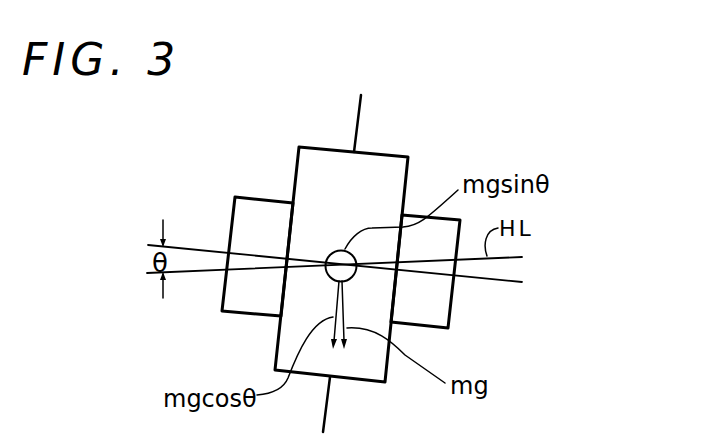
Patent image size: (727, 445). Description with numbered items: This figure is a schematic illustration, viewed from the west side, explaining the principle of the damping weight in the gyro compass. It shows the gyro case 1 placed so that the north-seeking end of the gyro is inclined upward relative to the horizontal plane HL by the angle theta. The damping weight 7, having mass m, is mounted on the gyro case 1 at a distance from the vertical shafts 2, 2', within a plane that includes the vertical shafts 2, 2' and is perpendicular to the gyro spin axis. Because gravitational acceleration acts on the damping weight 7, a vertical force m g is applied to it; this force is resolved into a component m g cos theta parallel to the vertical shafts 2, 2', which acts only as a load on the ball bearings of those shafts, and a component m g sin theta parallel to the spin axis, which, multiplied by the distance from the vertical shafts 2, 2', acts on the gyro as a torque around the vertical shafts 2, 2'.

The gyro case 1 is at (398, 154).
The vertical shaft 2 is at (384, 109).
The vertical shaft 2' is at (349, 408).
The damping weight 7 is at (333, 252).